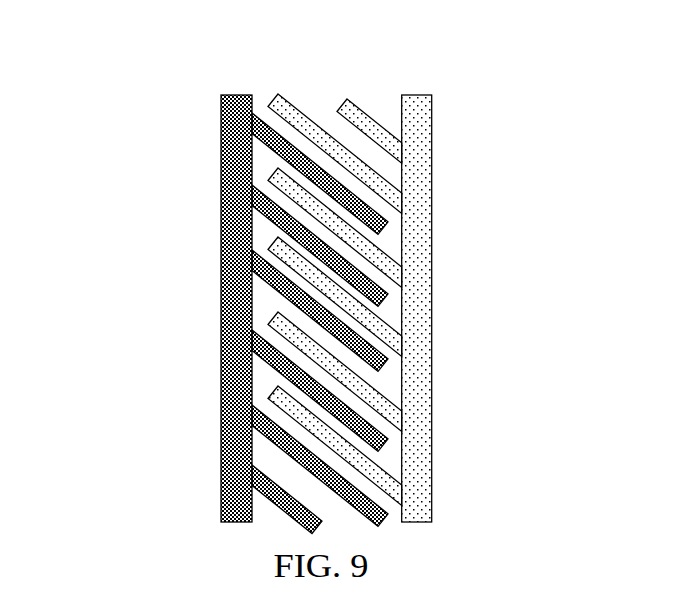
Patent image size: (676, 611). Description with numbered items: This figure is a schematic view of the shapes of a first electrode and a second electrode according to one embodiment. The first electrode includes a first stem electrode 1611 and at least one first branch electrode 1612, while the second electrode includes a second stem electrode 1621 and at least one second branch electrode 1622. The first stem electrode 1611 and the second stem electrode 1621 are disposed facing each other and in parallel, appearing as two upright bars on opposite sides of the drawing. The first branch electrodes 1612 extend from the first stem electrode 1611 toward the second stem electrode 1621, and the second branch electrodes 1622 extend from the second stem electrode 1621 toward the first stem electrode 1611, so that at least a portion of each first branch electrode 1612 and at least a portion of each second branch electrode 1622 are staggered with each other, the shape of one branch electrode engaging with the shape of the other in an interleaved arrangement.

The first stem electrode 1611 is at (238, 162).
The first branch electrode 1612 is at (278, 438).
The second stem electrode 1621 is at (411, 224).
The second branch electrode 1622 is at (349, 383).